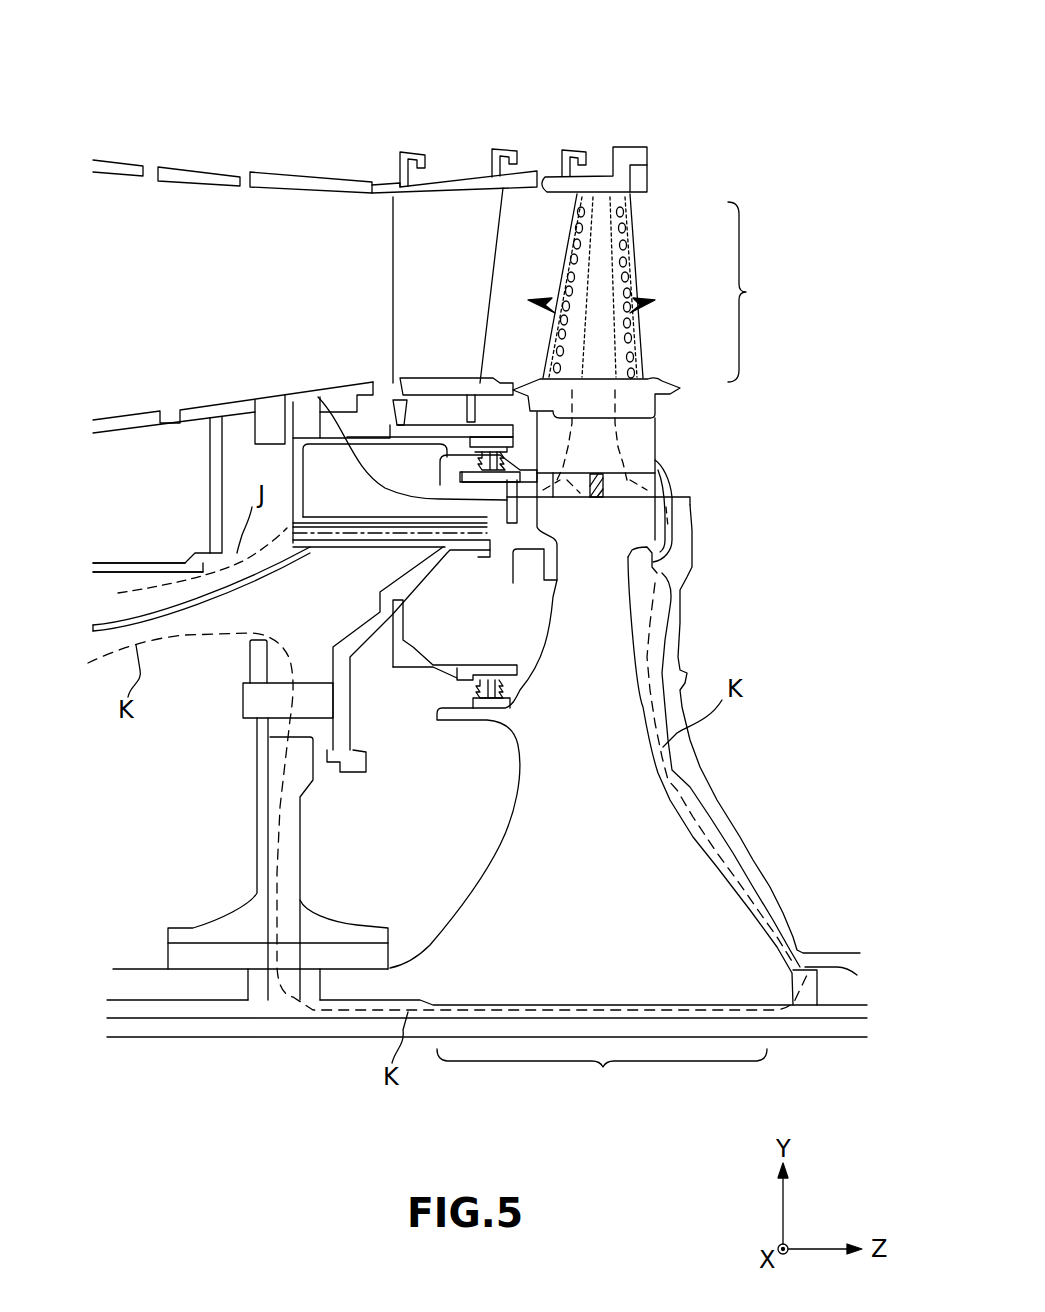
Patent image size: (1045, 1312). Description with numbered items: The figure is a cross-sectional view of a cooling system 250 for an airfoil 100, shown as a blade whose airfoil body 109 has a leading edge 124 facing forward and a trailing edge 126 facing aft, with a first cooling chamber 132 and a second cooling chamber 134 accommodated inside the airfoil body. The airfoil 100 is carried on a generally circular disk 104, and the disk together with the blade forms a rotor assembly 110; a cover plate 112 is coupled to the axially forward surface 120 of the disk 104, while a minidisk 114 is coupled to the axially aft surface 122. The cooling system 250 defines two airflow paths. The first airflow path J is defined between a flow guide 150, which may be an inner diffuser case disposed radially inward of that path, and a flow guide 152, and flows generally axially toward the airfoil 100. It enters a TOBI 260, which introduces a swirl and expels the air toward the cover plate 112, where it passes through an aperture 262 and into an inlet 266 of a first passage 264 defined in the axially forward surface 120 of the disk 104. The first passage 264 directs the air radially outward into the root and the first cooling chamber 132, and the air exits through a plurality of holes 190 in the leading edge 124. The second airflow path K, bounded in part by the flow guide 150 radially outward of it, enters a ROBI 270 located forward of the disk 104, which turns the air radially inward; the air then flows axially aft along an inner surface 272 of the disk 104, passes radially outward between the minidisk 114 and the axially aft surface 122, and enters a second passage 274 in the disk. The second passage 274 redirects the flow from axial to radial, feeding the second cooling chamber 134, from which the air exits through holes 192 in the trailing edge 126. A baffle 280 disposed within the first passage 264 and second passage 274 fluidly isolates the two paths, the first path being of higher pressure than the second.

The cooling system 250 is at (742, 98).
The airfoil 100 is at (646, 213).
The leading edge 124 is at (566, 250).
The trailing edge 126 is at (642, 257).
The first cooling chamber 132 is at (566, 292).
The second cooling chamber 134 is at (615, 290).
The holes 190 is at (557, 353).
The holes 192 is at (634, 357).
The airfoil body 109 is at (762, 292).
The inlet 266 is at (535, 495).
The aperture 262 is at (318, 397).
The baffle 280 is at (598, 480).
The flow guide 150 is at (98, 622).
The flow guide 152 is at (148, 565).
The TOBI 260 is at (347, 543).
The cover plate 112 is at (513, 583).
The first passage 264 is at (570, 490).
The second passage 274 is at (625, 500).
The axially forward surface 120 is at (508, 832).
The ROBI 270 is at (268, 877).
The disk 104 is at (630, 931).
The inner surface 272 is at (508, 1000).
The rotor assembly 110 is at (602, 1081).
The minidisk 114 is at (702, 785).
The axially aft surface 122 is at (717, 867).